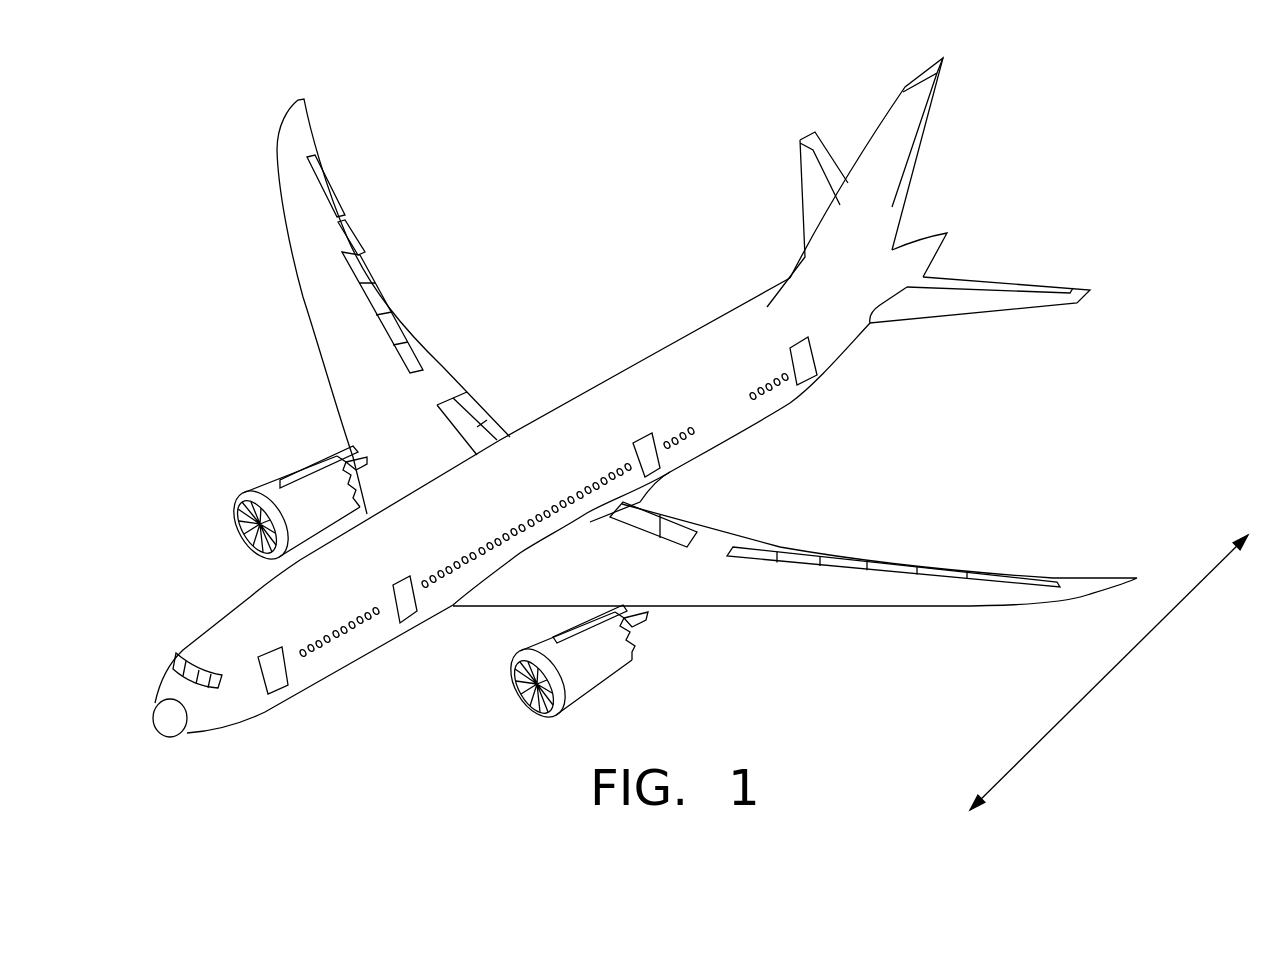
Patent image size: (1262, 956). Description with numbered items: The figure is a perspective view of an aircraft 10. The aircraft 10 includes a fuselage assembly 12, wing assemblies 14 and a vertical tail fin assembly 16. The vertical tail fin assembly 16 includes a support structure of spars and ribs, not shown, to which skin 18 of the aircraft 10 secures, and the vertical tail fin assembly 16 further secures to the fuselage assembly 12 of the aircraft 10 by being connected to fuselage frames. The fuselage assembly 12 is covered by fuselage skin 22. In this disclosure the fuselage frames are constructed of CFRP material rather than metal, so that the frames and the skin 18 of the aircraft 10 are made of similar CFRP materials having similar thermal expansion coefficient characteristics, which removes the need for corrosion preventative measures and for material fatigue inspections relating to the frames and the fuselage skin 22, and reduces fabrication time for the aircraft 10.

The aircraft 10 is at (600, 140).
The fuselage assembly 12 is at (680, 423).
The wing assemblies 14 is at (342, 357).
The vertical tail fin assembly 16 is at (888, 172).
The skin 18 is at (860, 262).
The fuselage skin 22 is at (645, 352).